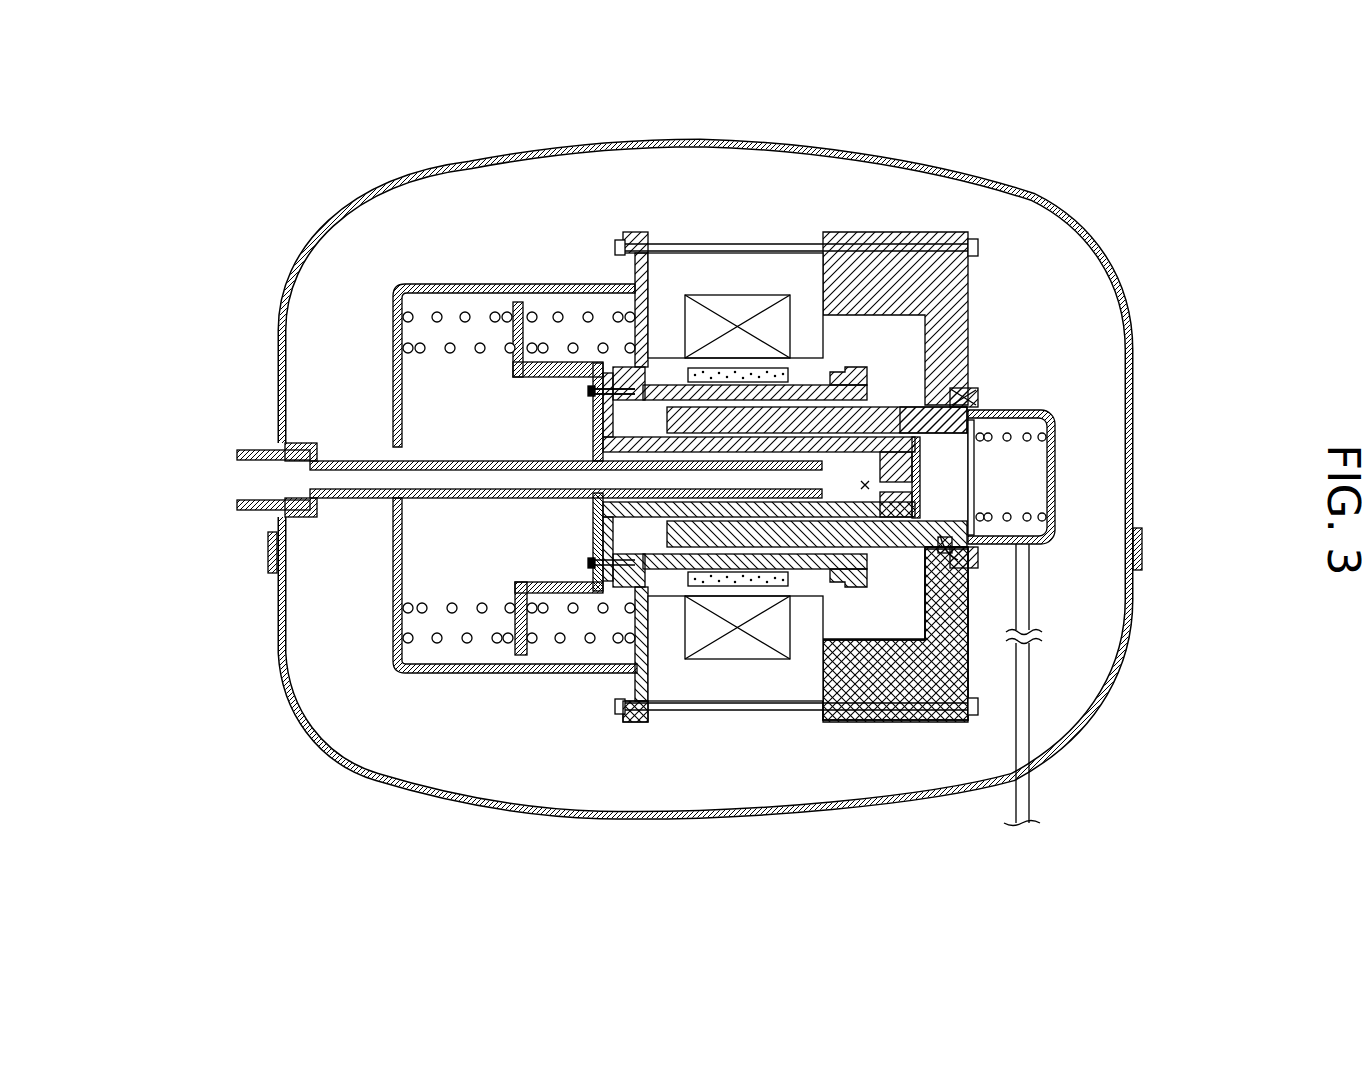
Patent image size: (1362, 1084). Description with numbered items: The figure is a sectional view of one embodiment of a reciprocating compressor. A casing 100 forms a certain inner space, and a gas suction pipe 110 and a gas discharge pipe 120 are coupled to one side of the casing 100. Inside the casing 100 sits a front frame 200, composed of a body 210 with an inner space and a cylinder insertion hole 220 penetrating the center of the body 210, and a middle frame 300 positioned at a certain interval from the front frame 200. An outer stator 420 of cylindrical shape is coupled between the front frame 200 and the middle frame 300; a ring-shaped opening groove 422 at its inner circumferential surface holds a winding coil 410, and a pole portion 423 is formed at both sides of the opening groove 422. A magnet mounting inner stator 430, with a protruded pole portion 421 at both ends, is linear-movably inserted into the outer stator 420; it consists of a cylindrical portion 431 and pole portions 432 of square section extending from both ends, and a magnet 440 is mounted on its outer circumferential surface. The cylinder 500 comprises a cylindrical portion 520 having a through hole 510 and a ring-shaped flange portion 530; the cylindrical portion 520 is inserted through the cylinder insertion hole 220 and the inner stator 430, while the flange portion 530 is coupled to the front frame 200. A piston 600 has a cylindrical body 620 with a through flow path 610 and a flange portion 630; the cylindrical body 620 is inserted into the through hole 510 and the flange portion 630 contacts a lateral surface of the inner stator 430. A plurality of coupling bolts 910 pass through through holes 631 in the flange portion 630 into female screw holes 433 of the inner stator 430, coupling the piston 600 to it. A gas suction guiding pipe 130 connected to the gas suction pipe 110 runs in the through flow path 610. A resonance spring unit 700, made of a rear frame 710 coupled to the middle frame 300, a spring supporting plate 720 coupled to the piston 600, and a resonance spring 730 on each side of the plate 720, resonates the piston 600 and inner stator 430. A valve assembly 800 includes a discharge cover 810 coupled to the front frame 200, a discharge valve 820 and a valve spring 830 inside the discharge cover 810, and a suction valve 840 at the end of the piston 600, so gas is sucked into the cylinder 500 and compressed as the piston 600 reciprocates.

The casing 100 is at (447, 807).
The gas suction pipe 110 is at (257, 508).
The gas discharge pipe 120 is at (1022, 795).
The gas suction guiding pipe 130 is at (358, 457).
The front frame 200 is at (978, 270).
The body 210 is at (970, 683).
The cylinder insertion hole 220 is at (970, 548).
The middle frame 300 is at (643, 230).
The winding coil 410 is at (748, 647).
The outer stator 420 is at (807, 707).
The protruded pole portion 421 is at (652, 707).
The opening groove 422 is at (703, 310).
The pole portion 423 is at (630, 355).
The magnet mounting inner stator 430 is at (847, 603).
The cylindrical portion 431 is at (743, 393).
The pole portions 432 is at (627, 363).
The female screw holes 433 is at (613, 392).
The magnet 440 is at (707, 593).
The cylinder 500 is at (958, 388).
The through hole 510 is at (978, 437).
The cylindrical portion 520 is at (937, 397).
The flange portion 530 is at (977, 390).
The piston 600 is at (867, 408).
The through flow path 610 is at (953, 680).
The cylindrical body 620 is at (757, 512).
The flange portion 630 is at (585, 420).
The through holes 631 is at (597, 383).
The resonance spring unit 700 is at (360, 518).
The rear frame 710 is at (387, 583).
The spring supporting plate 720 is at (507, 588).
The resonance spring 730 is at (560, 642).
The valve assembly 800 is at (1126, 445).
The discharge cover 810 is at (1057, 523).
The discharge valve 820 is at (977, 495).
The valve spring 830 is at (1030, 437).
The suction valve 840 is at (917, 463).
The coupling bolts 910 is at (607, 392).